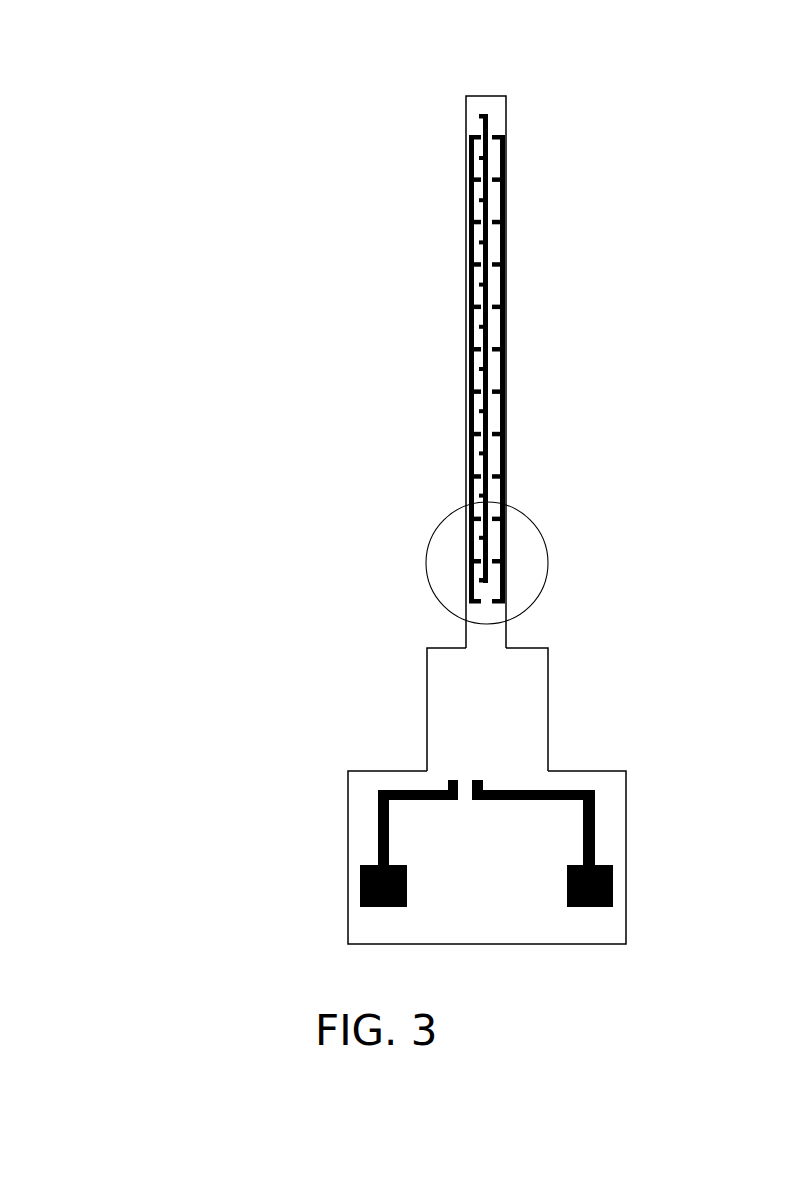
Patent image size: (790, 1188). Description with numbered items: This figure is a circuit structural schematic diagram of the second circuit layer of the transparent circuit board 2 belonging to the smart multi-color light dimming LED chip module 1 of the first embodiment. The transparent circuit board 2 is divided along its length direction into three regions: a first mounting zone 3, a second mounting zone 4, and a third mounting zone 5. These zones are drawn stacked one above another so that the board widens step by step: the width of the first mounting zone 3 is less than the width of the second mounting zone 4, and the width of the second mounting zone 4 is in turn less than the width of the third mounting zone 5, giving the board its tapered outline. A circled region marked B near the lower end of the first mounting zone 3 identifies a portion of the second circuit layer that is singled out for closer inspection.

The smart multi-color light dimming LED chip module 1 is at (580, 77).
The transparent circuit board 2 is at (208, 167).
The first mounting zone 3 is at (465, 302).
The second mounting zone 4 is at (445, 665).
The third mounting zone 5 is at (368, 807).
The enlarged region B is at (515, 562).